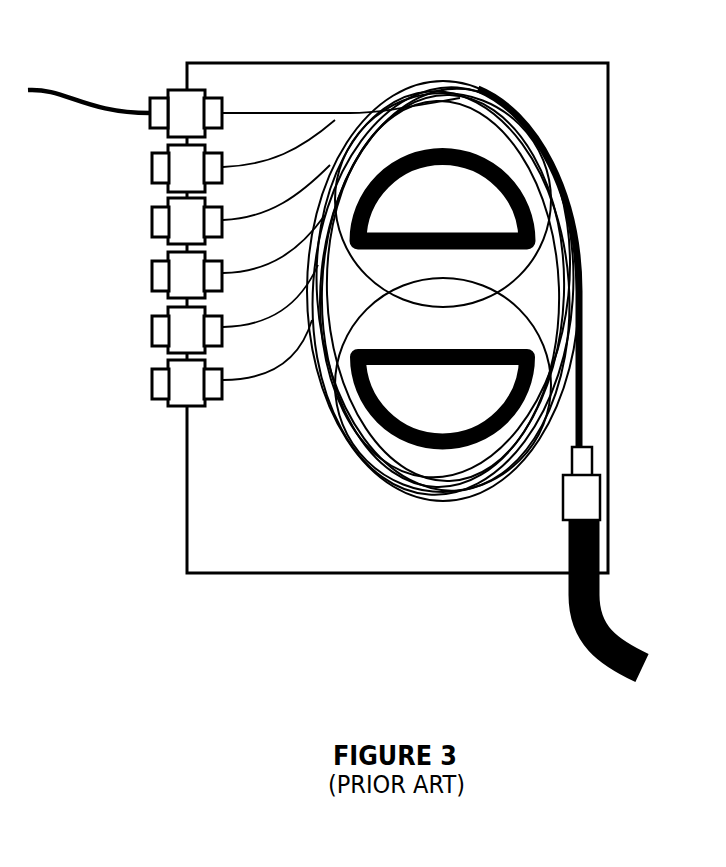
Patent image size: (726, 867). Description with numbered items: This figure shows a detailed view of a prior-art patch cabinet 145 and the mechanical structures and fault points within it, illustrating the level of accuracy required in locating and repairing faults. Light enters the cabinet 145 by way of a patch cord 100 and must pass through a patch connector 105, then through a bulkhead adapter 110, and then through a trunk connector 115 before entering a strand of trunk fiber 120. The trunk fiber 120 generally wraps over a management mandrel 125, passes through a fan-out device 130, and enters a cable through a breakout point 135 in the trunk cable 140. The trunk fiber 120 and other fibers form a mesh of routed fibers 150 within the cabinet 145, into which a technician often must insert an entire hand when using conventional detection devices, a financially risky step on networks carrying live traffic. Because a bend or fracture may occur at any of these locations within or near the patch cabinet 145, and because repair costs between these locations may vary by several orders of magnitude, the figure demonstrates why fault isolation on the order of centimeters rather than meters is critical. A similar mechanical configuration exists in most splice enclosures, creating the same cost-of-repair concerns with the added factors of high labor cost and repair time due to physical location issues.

The patch cord 100 is at (76, 106).
The patch connector 105 is at (152, 98).
The bulkhead adapter 110 is at (177, 90).
The trunk connector 115 is at (223, 100).
The trunk fiber 120 is at (293, 110).
The management mandrel 125 is at (355, 379).
The fan-out device 130 is at (583, 460).
The breakout point 135 is at (583, 487).
The trunk cable 140 is at (580, 637).
The patch cabinet 145 is at (538, 62).
The routed fibers 150 is at (510, 125).